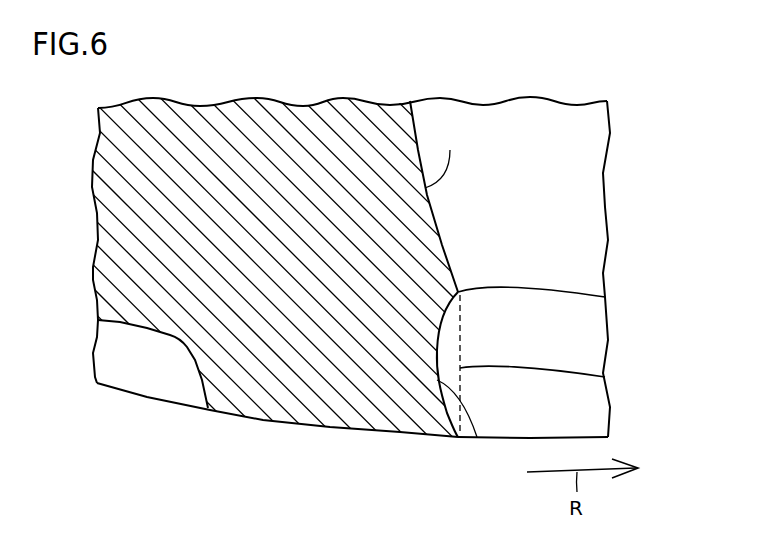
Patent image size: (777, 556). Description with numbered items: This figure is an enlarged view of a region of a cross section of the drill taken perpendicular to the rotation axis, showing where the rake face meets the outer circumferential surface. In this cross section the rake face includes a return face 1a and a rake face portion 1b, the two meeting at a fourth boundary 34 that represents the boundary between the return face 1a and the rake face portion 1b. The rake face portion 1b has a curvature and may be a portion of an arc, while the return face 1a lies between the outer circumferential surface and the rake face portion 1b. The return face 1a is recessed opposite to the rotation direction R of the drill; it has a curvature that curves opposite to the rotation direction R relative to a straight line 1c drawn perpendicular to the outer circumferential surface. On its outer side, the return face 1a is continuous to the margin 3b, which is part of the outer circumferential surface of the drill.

The return face 1a is at (477, 437).
The rake face portion 1b is at (450, 150).
The straight line 1c is at (605, 377).
The fourth boundary 34 is at (605, 297).
The margin 3b is at (330, 427).